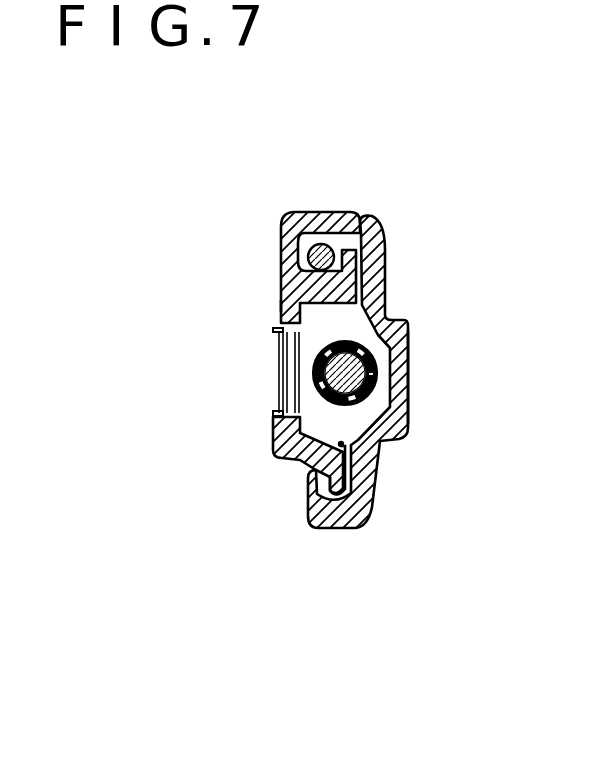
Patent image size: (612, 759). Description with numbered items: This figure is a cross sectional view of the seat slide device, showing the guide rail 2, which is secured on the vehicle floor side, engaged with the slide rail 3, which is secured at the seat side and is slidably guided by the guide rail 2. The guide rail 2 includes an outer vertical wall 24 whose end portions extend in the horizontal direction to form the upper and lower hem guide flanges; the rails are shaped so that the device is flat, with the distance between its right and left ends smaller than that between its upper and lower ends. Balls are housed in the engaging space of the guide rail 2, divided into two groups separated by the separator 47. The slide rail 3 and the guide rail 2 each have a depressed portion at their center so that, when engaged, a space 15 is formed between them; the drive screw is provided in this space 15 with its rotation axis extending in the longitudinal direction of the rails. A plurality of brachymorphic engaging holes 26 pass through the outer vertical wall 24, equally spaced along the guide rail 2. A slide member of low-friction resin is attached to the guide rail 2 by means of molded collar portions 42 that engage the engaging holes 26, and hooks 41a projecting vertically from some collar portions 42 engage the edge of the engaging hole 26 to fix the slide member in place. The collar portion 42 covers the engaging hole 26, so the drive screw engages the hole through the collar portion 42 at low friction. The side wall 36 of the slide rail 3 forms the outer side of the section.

The guide rail 2 is at (276, 225).
The slide rail 3 is at (396, 255).
The space 15 is at (340, 327).
The outer vertical wall 24 is at (280, 305).
The engaging hole 26 is at (277, 348).
The side wall of second member 36 is at (407, 349).
The hook 41a is at (277, 413).
The collar portion 42 is at (295, 366).
The separator 47 is at (307, 262).